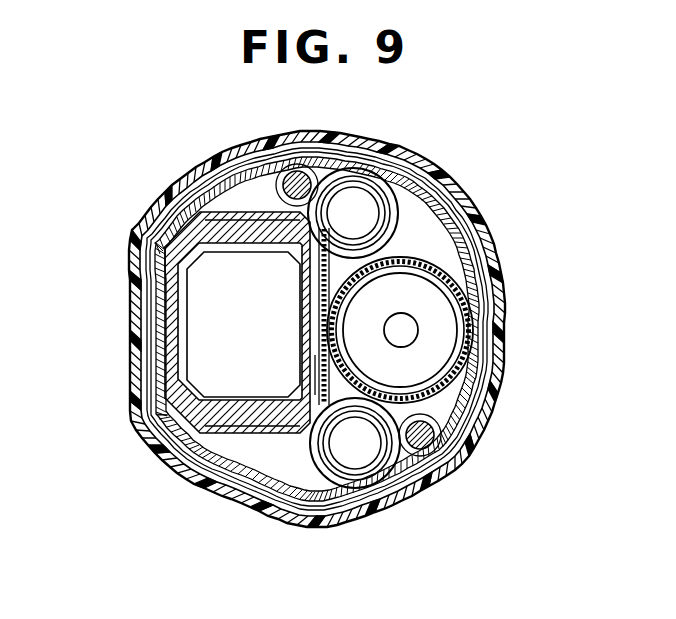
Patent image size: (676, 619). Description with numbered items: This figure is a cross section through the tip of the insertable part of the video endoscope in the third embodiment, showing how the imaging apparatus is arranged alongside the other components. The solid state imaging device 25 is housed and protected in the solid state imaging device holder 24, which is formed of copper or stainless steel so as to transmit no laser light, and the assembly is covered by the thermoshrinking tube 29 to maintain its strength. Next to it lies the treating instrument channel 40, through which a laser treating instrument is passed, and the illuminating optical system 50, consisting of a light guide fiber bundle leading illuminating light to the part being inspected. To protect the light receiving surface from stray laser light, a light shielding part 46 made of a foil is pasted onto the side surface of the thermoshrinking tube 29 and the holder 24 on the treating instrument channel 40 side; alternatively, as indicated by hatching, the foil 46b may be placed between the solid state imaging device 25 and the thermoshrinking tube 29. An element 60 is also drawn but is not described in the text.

The solid state imaging device holder 24 is at (240, 233).
The solid state imaging device 25 is at (190, 300).
The thermoshrinking tube 29 is at (148, 240).
The treating instrument channel 40 is at (440, 307).
The light shielding part 46 is at (327, 272).
The foil 46b is at (315, 352).
The illuminating optical system 50 is at (372, 211).
The wire 60 is at (413, 341).